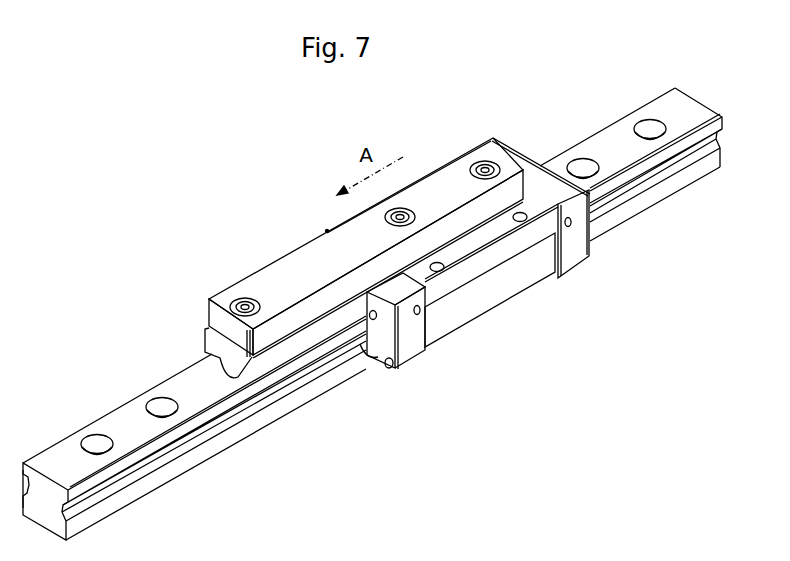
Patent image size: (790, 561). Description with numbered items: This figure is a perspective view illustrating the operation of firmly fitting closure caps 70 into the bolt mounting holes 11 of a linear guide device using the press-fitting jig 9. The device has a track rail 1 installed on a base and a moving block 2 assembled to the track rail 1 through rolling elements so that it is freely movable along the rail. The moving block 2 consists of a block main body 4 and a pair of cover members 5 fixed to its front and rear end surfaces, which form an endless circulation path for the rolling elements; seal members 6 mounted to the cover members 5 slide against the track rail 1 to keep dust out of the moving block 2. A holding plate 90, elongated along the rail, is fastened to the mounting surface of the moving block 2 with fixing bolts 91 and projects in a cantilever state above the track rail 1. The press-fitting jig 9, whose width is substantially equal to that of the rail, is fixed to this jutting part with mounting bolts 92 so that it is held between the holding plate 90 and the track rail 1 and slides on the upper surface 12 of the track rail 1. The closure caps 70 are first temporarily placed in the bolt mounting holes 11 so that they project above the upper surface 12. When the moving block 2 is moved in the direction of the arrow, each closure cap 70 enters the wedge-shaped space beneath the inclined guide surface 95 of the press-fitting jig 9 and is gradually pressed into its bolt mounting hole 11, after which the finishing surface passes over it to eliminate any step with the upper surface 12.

The track rail 1 is at (370, 303).
The moving block 2 is at (482, 300).
The block main body 4 is at (447, 327).
The cover member 5 is at (412, 350).
The seal member 6 is at (381, 362).
The press-fitting jig 9 is at (290, 350).
The bolt mounting hole 11 is at (638, 118).
The upper surface of the track rail 12 is at (47, 457).
The closure cap 70 is at (147, 389).
The holding plate 90 is at (367, 242).
The fixing bolt 91 is at (478, 161).
The mounting bolt 92 is at (236, 298).
The guide surface 95 is at (203, 362).